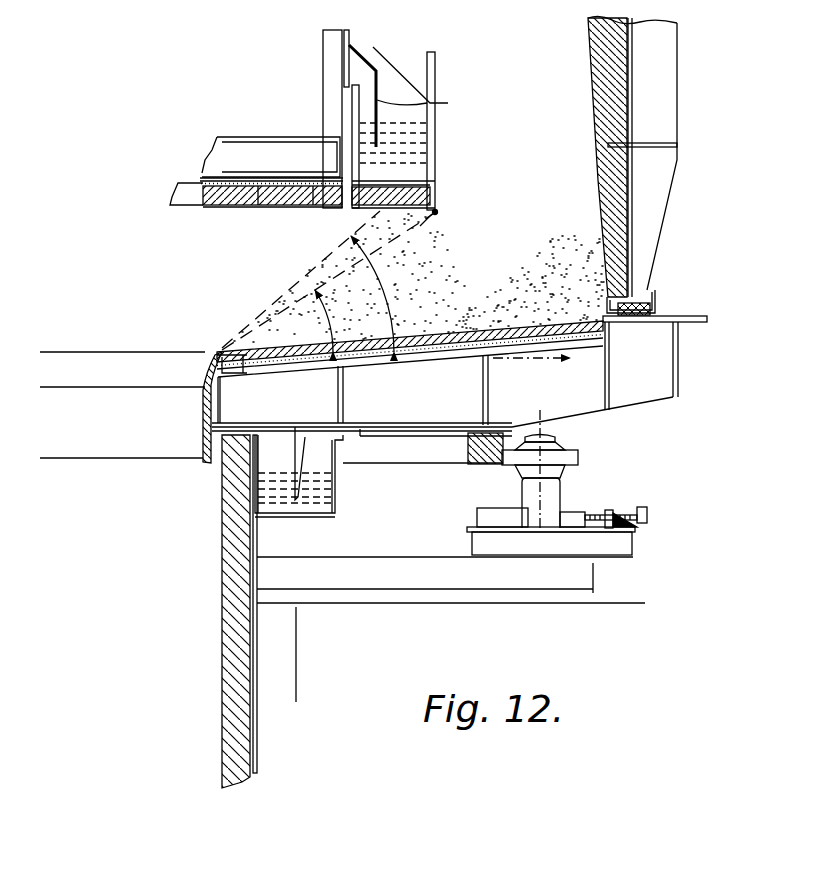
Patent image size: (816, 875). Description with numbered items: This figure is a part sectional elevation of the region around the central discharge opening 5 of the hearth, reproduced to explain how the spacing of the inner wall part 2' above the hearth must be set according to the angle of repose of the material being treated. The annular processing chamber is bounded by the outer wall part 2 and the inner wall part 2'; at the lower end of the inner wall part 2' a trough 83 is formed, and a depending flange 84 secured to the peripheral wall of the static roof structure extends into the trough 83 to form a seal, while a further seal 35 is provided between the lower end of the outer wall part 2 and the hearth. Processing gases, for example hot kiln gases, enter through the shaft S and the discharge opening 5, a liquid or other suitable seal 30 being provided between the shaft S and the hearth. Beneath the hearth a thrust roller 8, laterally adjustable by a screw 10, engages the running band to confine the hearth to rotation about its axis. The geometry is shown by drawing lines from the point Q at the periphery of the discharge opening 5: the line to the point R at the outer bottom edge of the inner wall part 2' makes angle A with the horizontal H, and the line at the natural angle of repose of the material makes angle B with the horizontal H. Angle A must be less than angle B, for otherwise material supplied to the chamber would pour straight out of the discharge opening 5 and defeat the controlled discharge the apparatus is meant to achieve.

The central discharge opening 5 is at (113, 379).
The inner wall part 2' is at (328, 120).
The depending flange 84 is at (425, 83).
The trough 83 is at (415, 148).
The outer bottom edge point of inner wall part R is at (440, 214).
The outer wall part 2 is at (615, 156).
The seal 35 is at (653, 298).
The periphery of the discharge opening Q is at (205, 342).
The angle A is at (327, 281).
The angle B is at (376, 294).
The horizontal reference H is at (541, 362).
The liquid seal 30 is at (322, 500).
The shaft S is at (222, 552).
The thrust roller 8 is at (568, 460).
The screw 10 is at (640, 500).